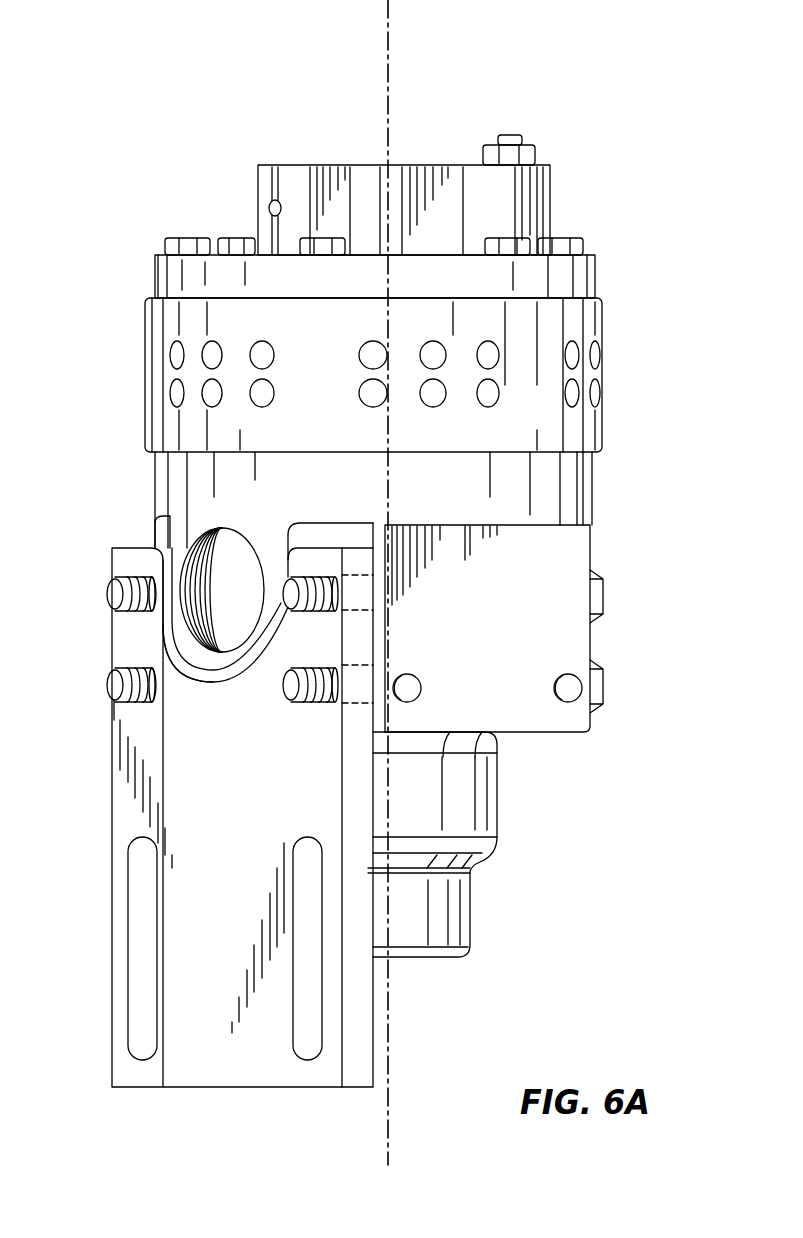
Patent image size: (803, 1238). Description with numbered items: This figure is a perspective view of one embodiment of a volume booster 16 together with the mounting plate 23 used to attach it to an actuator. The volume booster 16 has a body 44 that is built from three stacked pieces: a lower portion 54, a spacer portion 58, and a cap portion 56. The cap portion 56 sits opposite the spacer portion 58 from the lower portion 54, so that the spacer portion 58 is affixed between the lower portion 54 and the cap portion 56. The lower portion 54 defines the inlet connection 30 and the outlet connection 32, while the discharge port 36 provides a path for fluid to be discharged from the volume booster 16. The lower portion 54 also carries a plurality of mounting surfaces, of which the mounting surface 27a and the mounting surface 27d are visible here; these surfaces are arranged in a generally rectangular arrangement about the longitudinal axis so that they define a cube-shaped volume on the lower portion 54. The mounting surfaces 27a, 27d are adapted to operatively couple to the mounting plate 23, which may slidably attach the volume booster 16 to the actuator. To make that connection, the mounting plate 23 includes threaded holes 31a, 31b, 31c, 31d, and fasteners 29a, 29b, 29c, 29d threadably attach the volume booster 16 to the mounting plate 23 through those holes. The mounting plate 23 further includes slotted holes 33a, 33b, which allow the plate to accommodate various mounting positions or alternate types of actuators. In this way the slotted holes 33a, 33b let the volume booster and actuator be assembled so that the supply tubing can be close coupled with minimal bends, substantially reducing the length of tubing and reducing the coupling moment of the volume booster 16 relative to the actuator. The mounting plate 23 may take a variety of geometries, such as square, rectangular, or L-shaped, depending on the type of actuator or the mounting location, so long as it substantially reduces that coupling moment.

The volume booster 16 is at (620, 188).
The mounting plate 23 is at (192, 1067).
The mounting surface 27a is at (574, 637).
The mounting surface 27d is at (155, 536).
The fastener 29a is at (113, 703).
The fastener 29b is at (113, 602).
The fastener 29c is at (290, 602).
The fastener 29d is at (290, 702).
The inlet connection 30 is at (440, 913).
The threaded hole 31a is at (140, 710).
The threaded hole 31b is at (163, 686).
The threaded hole 31c is at (363, 600).
The threaded hole 31d is at (365, 668).
The outlet connection 32 is at (205, 555).
The slotted hole 33a is at (147, 1005).
The slotted hole 33b is at (317, 997).
The discharge port 36 is at (172, 357).
The body 44 is at (143, 294).
The lower portion 54 is at (580, 490).
The cap portion 56 is at (375, 182).
The spacer portion 58 is at (585, 432).